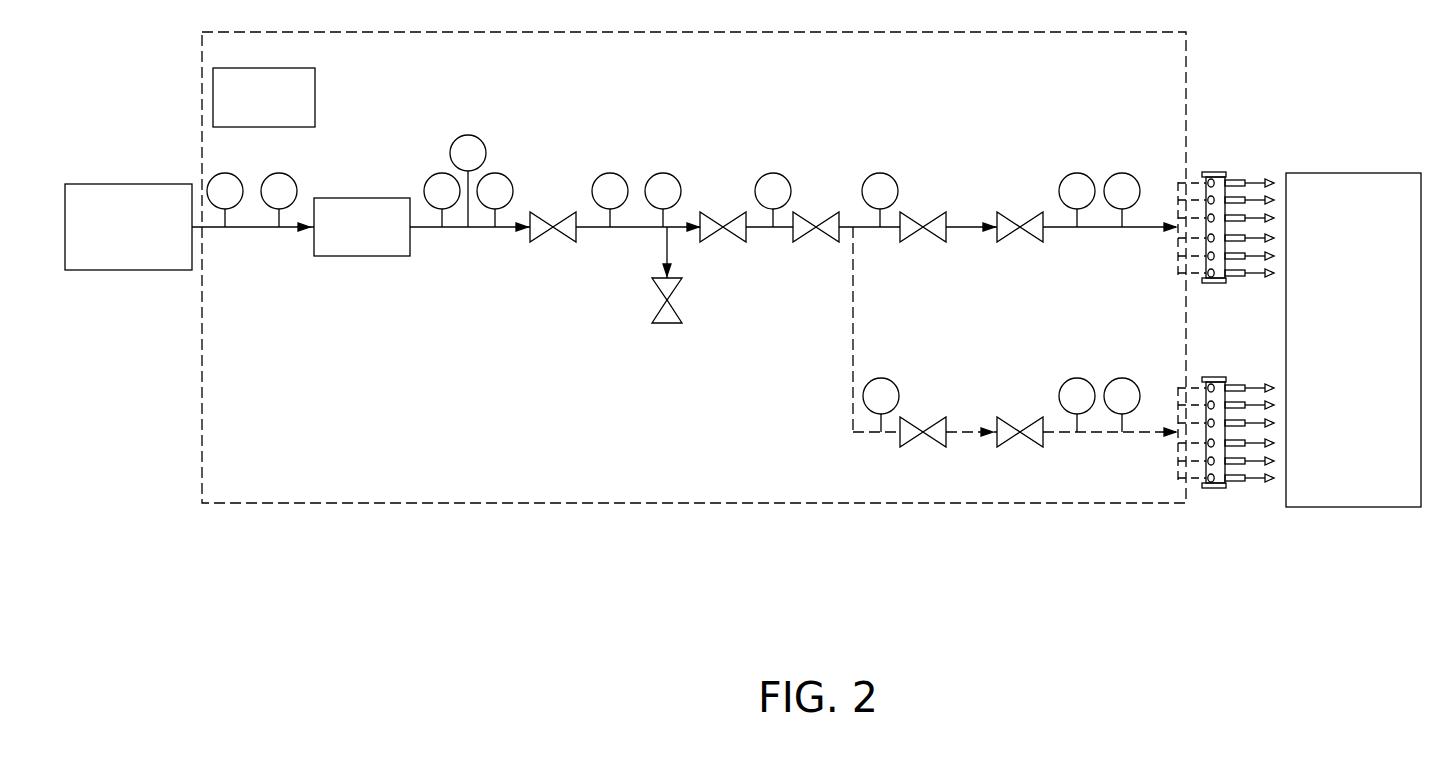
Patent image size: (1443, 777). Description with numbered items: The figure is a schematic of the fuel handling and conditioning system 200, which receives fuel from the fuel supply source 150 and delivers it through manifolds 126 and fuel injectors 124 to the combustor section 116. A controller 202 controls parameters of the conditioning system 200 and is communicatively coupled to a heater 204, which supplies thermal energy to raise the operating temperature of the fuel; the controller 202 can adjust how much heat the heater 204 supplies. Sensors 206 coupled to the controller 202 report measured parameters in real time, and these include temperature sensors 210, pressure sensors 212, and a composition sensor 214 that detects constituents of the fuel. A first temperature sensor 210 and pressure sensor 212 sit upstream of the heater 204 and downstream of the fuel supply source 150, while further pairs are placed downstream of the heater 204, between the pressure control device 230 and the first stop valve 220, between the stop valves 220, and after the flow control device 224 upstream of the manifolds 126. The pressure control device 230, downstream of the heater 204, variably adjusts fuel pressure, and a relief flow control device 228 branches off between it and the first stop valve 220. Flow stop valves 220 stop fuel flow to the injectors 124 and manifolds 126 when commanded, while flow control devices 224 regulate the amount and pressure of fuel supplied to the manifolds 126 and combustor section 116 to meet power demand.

The combustor section 116 is at (1336, 345).
The fuel injectors 124 is at (1239, 178).
The manifolds 126 is at (1216, 171).
The fuel supply source 150 is at (111, 261).
The conditioning system 200 is at (704, 86).
The controller 202 is at (247, 120).
The heater 204 is at (345, 251).
The sensor 206 is at (405, 126).
The temperature sensor 210 is at (292, 178).
The pressure sensor 212 is at (238, 178).
The composition sensor 214 is at (476, 137).
The flow stop valve 220 is at (738, 239).
The flow control device 224 is at (938, 239).
The relief flow control device 228 is at (662, 304).
The pressure control device 230 is at (569, 239).